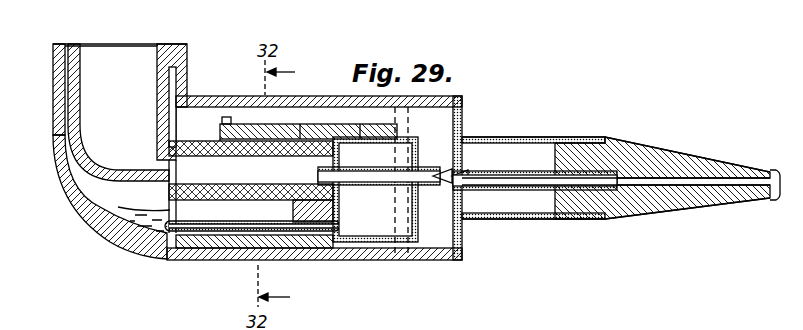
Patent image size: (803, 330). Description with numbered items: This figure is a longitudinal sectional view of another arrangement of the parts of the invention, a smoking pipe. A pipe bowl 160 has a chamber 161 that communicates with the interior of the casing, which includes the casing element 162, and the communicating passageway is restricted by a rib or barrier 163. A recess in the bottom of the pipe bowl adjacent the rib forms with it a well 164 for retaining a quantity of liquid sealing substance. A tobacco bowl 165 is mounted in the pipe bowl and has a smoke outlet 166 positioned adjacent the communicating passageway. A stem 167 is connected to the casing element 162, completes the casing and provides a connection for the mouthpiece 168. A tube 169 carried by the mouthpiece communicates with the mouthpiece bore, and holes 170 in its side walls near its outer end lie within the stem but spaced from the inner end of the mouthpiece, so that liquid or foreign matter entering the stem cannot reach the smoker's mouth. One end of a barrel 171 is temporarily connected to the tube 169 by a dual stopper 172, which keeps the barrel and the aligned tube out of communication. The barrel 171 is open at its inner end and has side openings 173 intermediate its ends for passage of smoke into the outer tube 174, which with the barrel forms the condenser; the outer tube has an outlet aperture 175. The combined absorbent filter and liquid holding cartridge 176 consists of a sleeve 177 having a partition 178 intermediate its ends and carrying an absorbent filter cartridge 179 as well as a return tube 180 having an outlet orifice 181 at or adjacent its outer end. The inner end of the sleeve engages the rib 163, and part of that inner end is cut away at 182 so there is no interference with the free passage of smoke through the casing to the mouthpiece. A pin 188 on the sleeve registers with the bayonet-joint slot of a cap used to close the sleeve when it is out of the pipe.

The pipe bowl 160 is at (60, 160).
The chamber 161 is at (65, 140).
The casing element 162 is at (320, 96).
The rib or barrier 163 is at (167, 115).
The well 164 is at (118, 240).
The tobacco bowl 165 is at (92, 50).
The smoke outlet 166 is at (165, 172).
The stem 167 is at (462, 127).
The mouthpiece 168 is at (647, 150).
The tube 169 is at (541, 190).
The holes 170 is at (478, 186).
The barrel 171 is at (428, 167).
The dual stopper 172 is at (452, 185).
The side openings 173 is at (372, 170).
The outer tube 174 is at (418, 232).
The outlet aperture 175 is at (340, 234).
The combined absorbent filter and liquid holding cartridge 176 is at (306, 126).
The sleeve 177 is at (377, 123).
The partition 178 is at (326, 123).
The absorbent filter cartridge 179 is at (238, 148).
The return tube 180 is at (281, 228).
The outlet orifice 181 is at (168, 250).
The cut away part 182 is at (220, 137).
The pin 188 is at (225, 117).